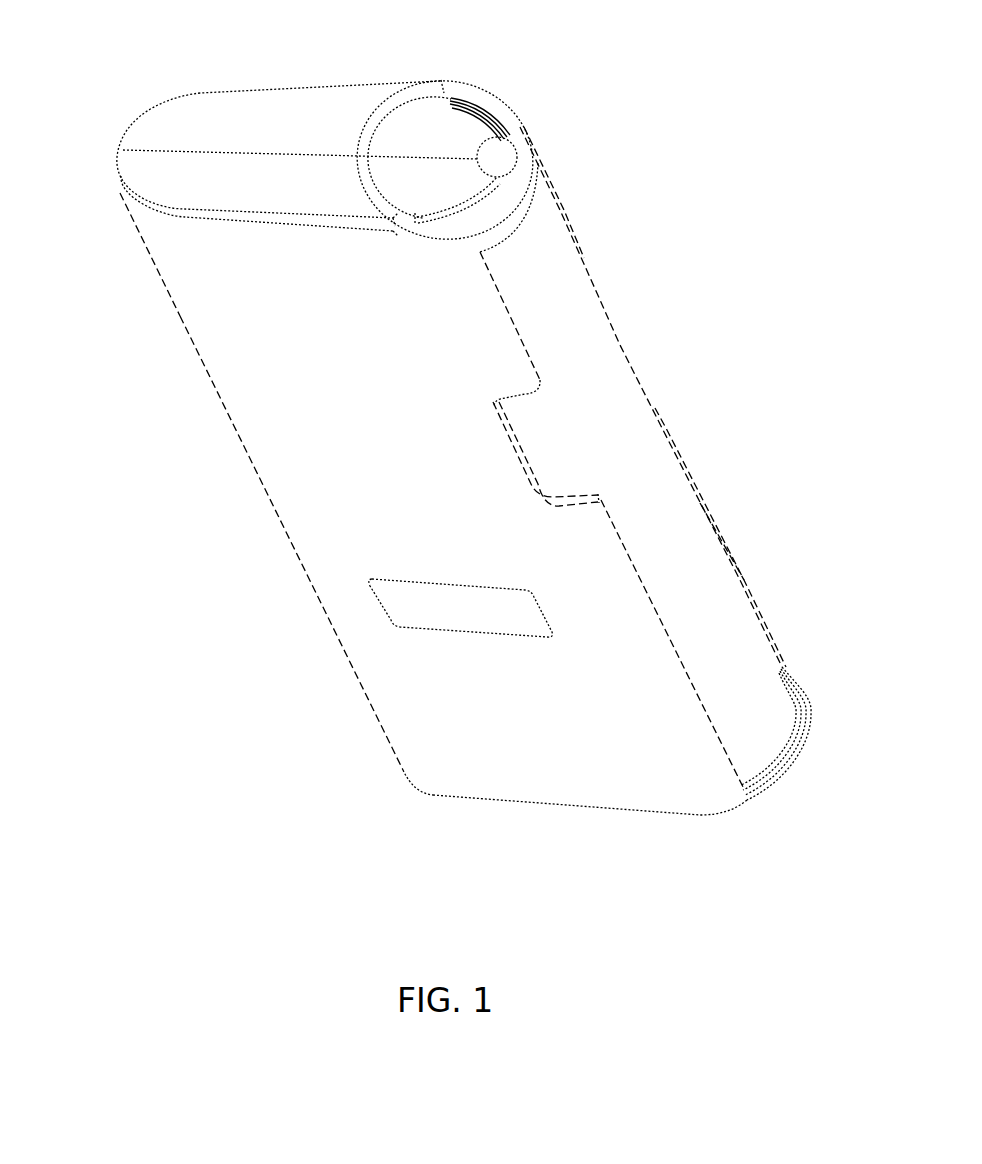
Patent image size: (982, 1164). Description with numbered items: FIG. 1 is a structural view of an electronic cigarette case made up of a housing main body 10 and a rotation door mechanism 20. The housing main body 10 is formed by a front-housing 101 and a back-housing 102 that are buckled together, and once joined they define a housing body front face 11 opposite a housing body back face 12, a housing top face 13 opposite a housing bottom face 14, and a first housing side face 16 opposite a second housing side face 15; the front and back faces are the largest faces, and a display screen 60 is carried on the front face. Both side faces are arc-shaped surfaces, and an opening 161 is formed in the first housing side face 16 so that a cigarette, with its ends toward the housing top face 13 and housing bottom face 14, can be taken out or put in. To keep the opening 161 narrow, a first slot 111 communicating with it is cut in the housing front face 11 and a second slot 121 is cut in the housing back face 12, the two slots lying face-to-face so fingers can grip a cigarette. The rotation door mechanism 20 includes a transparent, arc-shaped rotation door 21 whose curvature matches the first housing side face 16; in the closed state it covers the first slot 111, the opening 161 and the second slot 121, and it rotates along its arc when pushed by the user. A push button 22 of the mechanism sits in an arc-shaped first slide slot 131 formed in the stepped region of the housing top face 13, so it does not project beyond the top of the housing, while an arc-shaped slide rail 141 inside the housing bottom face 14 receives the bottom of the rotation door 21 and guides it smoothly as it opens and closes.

The housing main body 10 is at (152, 134).
The housing body front face 11 is at (222, 290).
The housing body back face 12 is at (353, 83).
The housing top face 13 is at (233, 113).
The housing bottom face 14 is at (545, 803).
The second housing side face 15 is at (217, 390).
The first housing side face 16 is at (541, 162).
The rotation door mechanism 20 is at (663, 525).
The rotation door 21 is at (720, 602).
The push button 22 is at (508, 135).
The display screen 60 is at (400, 598).
The front-housing 101 is at (305, 508).
The back-housing 102 is at (473, 92).
The first slot 111 is at (523, 437).
The second slot 121 is at (582, 258).
The first slide slot 131 is at (502, 150).
The slide rail 141 is at (803, 710).
The opening 161 is at (608, 422).